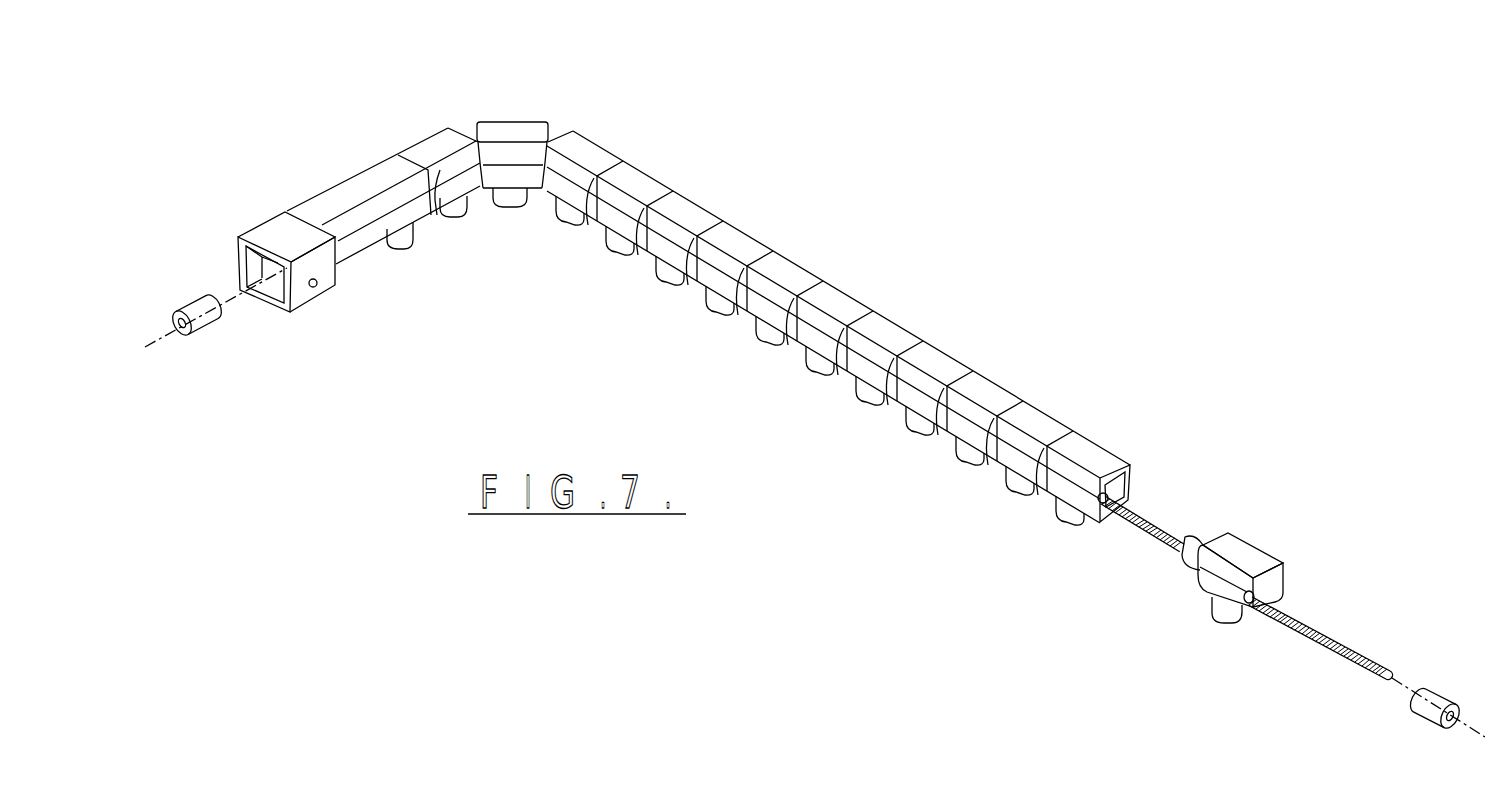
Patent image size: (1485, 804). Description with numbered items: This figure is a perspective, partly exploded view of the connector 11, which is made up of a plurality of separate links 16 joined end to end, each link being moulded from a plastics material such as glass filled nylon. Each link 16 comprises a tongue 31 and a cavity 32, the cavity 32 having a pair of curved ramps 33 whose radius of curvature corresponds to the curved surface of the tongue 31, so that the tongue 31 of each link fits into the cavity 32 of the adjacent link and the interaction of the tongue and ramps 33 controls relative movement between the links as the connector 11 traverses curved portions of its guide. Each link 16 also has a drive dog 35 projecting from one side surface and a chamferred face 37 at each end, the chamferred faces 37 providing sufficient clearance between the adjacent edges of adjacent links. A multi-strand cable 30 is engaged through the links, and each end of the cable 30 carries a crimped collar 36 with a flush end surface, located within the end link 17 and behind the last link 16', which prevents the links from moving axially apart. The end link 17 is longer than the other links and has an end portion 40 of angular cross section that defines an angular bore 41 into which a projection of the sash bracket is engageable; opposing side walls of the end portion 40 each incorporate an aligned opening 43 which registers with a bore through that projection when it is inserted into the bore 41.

The connector 11 is at (922, 300).
The link 16 is at (789, 287).
The last link 16' is at (1266, 544).
The end link 17 is at (362, 225).
The multi-strand cable 30 is at (1303, 618).
The tongue 31 is at (1200, 537).
The cavity 32 is at (1128, 466).
The curved ramps 33 is at (1128, 482).
The drive dog 35 is at (454, 220).
The collar 36 is at (203, 336).
The chamferred face 37 is at (537, 172).
The end portion 40 is at (283, 227).
The angular bore 41 is at (237, 246).
The opening 43 is at (316, 288).